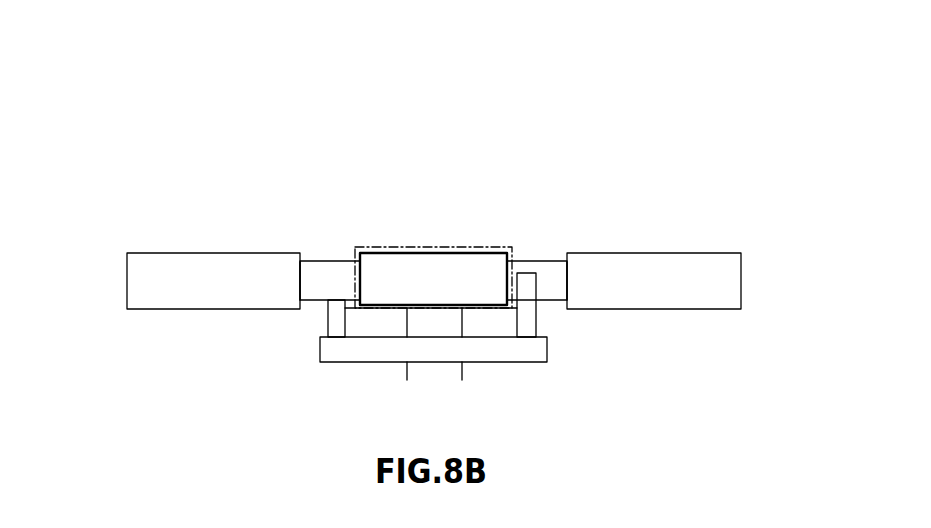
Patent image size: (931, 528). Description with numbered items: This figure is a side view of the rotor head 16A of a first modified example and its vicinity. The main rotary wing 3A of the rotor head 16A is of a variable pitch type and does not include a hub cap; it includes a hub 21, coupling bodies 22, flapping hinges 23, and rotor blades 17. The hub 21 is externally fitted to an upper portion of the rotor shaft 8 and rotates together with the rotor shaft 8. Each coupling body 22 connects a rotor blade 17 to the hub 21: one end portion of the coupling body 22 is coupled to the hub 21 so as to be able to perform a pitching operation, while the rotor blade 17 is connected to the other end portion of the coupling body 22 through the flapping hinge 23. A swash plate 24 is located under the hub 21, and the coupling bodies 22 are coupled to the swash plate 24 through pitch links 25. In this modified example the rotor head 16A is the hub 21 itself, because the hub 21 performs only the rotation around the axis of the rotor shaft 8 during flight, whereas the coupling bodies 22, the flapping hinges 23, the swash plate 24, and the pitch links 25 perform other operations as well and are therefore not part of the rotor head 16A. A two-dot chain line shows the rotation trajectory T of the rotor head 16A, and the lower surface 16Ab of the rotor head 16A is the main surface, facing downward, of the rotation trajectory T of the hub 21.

The main rotary wing 3A is at (298, 118).
The rotor blade 17 is at (138, 292).
The coupling body 22 is at (338, 270).
The flapping hinge 23 is at (302, 270).
The rotation trajectory T is at (400, 247).
The rotor head 16A is at (459, 142).
The hub 21 is at (477, 273).
The lower surface 16Ab is at (483, 308).
The pitch link 25 is at (333, 318).
The swash plate 24 is at (533, 363).
The rotor shaft 8 is at (407, 372).